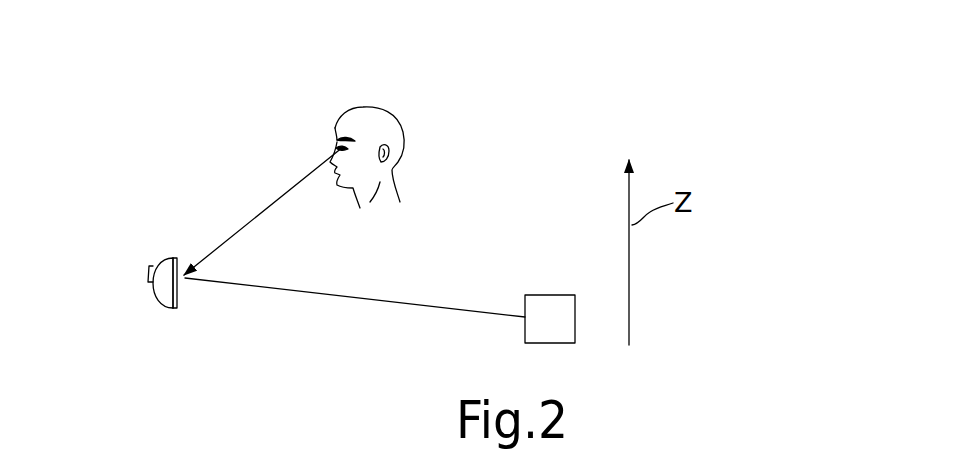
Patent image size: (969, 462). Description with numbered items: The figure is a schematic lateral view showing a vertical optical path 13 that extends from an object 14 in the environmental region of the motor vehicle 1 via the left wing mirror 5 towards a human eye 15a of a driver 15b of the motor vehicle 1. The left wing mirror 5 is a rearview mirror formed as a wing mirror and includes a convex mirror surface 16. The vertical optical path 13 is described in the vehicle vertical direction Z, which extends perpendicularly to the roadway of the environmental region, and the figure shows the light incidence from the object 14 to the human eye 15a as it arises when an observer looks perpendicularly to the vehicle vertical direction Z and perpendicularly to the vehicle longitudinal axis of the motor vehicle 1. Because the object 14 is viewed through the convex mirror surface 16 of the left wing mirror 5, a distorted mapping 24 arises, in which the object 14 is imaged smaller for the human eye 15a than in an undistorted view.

The motor vehicle 1 is at (118, 232).
The left wing mirror 5 is at (157, 283).
The vertical optical path 13 is at (257, 216).
The object 14 is at (545, 300).
The human eye 15a is at (333, 145).
The driver 15b is at (394, 106).
The convex mirror surface 16 is at (183, 293).
The distorted mapping 24 is at (178, 235).